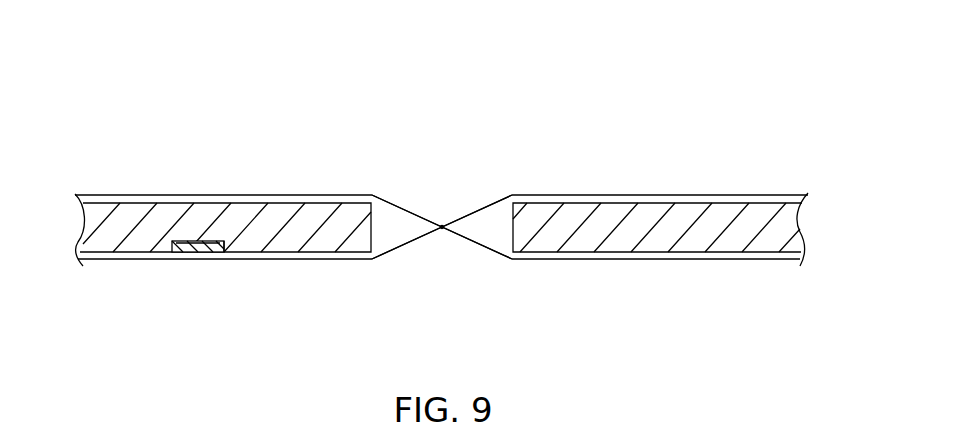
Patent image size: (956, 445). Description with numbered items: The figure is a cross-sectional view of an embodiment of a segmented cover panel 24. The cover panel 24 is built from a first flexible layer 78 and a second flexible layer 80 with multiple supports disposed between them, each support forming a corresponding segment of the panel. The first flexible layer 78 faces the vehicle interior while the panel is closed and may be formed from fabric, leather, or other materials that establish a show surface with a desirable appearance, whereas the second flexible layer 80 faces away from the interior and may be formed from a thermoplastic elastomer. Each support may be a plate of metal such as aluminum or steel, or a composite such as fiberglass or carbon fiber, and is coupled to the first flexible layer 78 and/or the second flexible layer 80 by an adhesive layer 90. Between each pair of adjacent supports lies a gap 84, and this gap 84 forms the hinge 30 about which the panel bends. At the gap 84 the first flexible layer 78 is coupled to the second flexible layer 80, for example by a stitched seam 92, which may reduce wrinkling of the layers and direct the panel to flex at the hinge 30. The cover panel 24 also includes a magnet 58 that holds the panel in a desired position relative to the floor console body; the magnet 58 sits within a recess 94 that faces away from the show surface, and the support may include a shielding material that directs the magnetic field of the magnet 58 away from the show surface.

The segmented cover panel 24 is at (460, 113).
The hinge 30 is at (413, 262).
The magnet 58 is at (188, 247).
The first flexible layer 78 is at (222, 195).
The second flexible layer 80 is at (198, 253).
The gap 84 is at (441, 201).
The adhesive layer 90 is at (110, 196).
The stitched seam 92 is at (441, 228).
The recess 94 is at (222, 241).